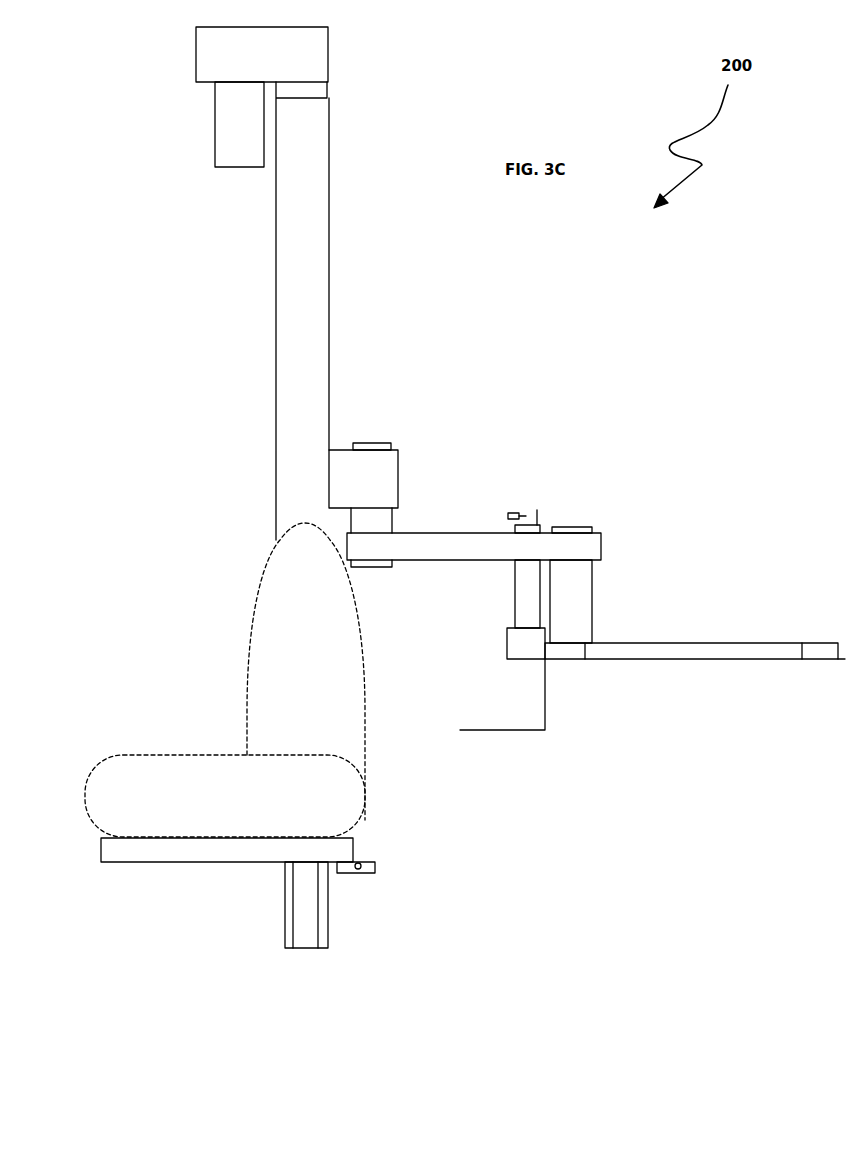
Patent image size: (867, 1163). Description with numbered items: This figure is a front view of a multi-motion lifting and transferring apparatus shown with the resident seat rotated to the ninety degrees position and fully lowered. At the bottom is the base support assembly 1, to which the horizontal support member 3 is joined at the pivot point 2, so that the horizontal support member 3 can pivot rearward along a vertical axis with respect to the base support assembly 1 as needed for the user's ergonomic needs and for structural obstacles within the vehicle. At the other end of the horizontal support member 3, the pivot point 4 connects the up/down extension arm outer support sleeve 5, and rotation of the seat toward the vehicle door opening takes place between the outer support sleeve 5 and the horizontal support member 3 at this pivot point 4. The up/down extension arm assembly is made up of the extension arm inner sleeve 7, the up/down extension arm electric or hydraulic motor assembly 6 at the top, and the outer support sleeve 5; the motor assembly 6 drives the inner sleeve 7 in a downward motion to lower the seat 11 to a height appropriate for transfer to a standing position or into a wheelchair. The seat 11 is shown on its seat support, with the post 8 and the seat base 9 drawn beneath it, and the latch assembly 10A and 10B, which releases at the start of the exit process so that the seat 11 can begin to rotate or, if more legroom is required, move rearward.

The base support assembly 1 is at (528, 605).
The pivot point 2 is at (575, 598).
The horizontal support member 3 is at (448, 540).
The pivot point 4 is at (370, 524).
The up/down extension arm outer support sleeve 5 is at (343, 458).
The up/down extension arm electric or hydraulic motor assembly 6 is at (292, 51).
The extension arm inner sleeve 7 is at (294, 923).
The seat post inner member 8 is at (308, 911).
The seat base 9 is at (150, 849).
The latch assembly 10A is at (375, 863).
The latch assembly 10B is at (540, 515).
The seat 11 is at (163, 794).